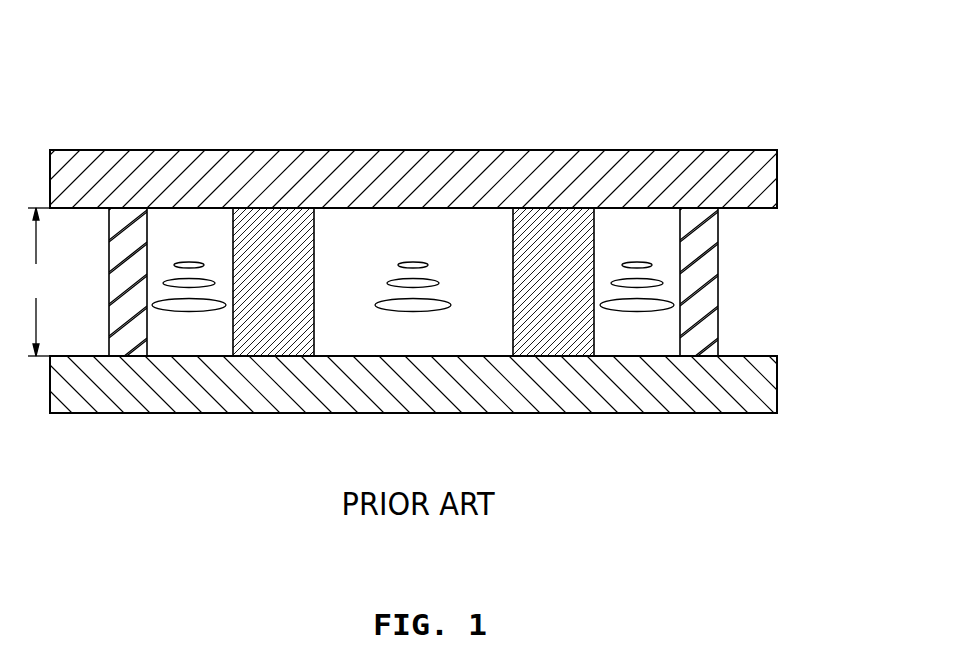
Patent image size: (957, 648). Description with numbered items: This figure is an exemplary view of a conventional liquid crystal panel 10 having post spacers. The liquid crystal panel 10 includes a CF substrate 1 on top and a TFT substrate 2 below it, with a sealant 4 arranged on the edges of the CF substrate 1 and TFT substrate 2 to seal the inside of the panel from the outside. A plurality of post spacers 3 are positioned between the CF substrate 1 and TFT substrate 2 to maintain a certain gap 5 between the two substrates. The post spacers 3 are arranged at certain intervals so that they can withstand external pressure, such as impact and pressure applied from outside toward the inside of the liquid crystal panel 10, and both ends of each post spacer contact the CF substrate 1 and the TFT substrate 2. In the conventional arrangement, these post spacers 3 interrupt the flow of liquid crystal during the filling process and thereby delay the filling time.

The liquid crystal panel 10 is at (184, 91).
The CF substrate 1 is at (772, 175).
The TFT substrate 2 is at (772, 380).
The post spacers 3 is at (585, 283).
The sealant 4 is at (710, 245).
The gap 5 is at (39, 282).